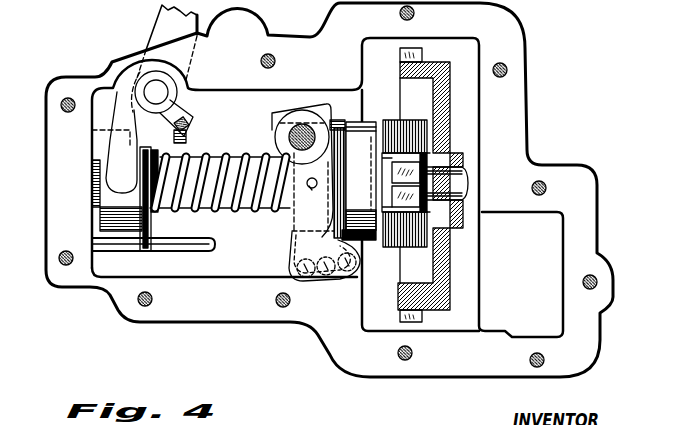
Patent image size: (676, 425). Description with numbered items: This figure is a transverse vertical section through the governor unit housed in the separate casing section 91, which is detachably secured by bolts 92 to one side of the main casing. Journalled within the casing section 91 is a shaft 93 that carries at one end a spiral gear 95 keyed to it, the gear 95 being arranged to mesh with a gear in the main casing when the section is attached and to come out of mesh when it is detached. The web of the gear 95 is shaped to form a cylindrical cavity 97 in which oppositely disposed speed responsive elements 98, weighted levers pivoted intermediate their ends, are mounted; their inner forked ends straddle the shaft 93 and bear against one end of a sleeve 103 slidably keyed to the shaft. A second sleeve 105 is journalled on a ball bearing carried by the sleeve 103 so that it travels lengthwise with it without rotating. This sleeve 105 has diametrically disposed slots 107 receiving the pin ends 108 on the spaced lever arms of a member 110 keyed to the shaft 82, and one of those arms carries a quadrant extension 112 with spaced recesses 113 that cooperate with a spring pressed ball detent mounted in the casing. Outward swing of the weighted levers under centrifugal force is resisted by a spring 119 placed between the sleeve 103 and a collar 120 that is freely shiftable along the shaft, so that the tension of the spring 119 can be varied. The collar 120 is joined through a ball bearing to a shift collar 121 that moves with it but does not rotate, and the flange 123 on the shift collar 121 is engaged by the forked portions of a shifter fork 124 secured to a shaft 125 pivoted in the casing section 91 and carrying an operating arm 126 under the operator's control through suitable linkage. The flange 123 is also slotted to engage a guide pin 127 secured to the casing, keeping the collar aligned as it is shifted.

The casing section 91 is at (53, 162).
The bolts 92 is at (59, 103).
The operating arm 126 is at (162, 22).
The shaft 125 is at (146, 87).
The shifter fork 124 is at (114, 119).
The collar 120 is at (188, 123).
The shift collar 121 is at (120, 200).
The flange 123 is at (148, 214).
The guide pin 127 is at (170, 243).
The spring 119 is at (227, 210).
The shaft 93 is at (241, 147).
The member 110 is at (281, 143).
The shaft 82 is at (306, 127).
The pin ends 108 is at (312, 189).
The slots 107 is at (313, 192).
The quadrant extension 112 is at (291, 244).
The recesses 113 is at (342, 280).
The sleeve 105 is at (362, 142).
The speed responsive elements 98 is at (408, 133).
The sleeve 103 is at (414, 176).
The cylindrical cavity 97 is at (432, 273).
The gear 95 is at (406, 315).